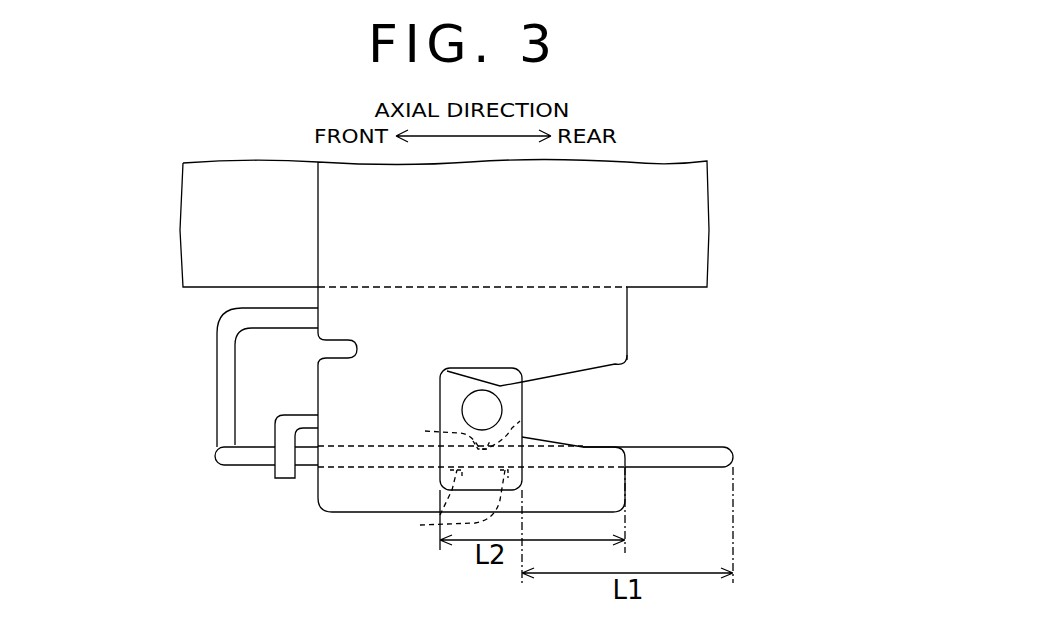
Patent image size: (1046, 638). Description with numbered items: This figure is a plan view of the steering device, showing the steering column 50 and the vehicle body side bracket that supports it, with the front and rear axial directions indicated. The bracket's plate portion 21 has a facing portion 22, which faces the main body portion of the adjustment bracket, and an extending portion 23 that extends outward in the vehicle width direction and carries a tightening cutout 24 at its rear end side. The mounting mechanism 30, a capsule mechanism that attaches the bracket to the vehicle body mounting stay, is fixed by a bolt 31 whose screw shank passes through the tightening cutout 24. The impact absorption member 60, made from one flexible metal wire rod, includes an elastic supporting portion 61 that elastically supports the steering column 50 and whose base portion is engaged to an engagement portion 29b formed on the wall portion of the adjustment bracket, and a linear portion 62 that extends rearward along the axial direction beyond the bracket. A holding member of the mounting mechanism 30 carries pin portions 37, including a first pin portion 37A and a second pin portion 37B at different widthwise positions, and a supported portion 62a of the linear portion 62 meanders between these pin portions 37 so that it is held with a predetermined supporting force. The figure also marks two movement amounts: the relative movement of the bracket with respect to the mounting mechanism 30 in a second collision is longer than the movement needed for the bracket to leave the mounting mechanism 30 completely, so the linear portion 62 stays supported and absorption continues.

The steering column 50 is at (183, 262).
The plate portion 21 is at (318, 192).
The facing portion 22 is at (318, 240).
The tightening cutout 24 is at (607, 367).
The extending portion 23 is at (331, 505).
The engagement portion 29b is at (287, 428).
The mounting mechanism 30 is at (443, 405).
The bolt 31 is at (473, 403).
The pin portion 37 is at (433, 478).
The first pin portion 37A is at (442, 431).
The second pin portion 37B is at (440, 522).
The impact absorption member 60 is at (239, 399).
The elastic supporting portion 61 is at (217, 389).
The linear portion 62 is at (668, 452).
The supported portion 62a is at (510, 428).